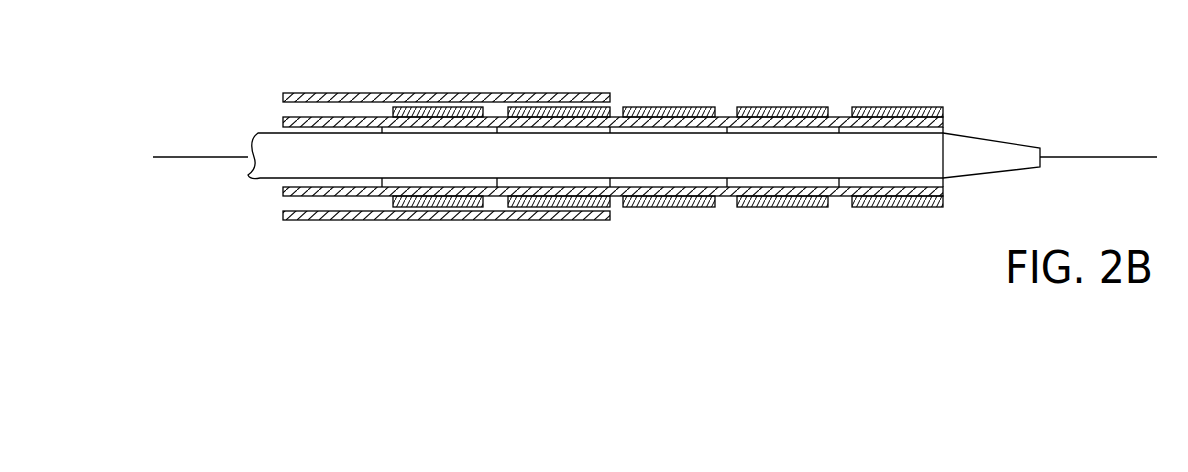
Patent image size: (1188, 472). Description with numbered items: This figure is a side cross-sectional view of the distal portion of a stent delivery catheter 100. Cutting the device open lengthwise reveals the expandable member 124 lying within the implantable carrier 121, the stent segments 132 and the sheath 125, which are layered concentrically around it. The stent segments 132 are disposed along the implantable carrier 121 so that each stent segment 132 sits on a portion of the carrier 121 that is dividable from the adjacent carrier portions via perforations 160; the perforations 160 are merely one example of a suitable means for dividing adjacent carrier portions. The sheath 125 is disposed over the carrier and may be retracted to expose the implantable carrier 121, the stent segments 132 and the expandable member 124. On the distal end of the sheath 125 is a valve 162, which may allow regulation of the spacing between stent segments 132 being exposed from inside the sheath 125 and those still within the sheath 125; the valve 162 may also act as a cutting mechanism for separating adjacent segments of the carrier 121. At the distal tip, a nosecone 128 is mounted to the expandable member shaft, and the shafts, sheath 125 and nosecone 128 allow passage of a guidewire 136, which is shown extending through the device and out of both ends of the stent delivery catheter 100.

The stent delivery catheter 100 is at (671, 320).
The implantable carrier 121 is at (613, 200).
The expandable member 124 is at (823, 143).
The sheath 125 is at (470, 97).
The nosecone 128 is at (983, 147).
The stent segments 132 is at (860, 208).
The guidewire 136 is at (202, 150).
The perforations 160 is at (617, 106).
The valve 162 is at (612, 105).